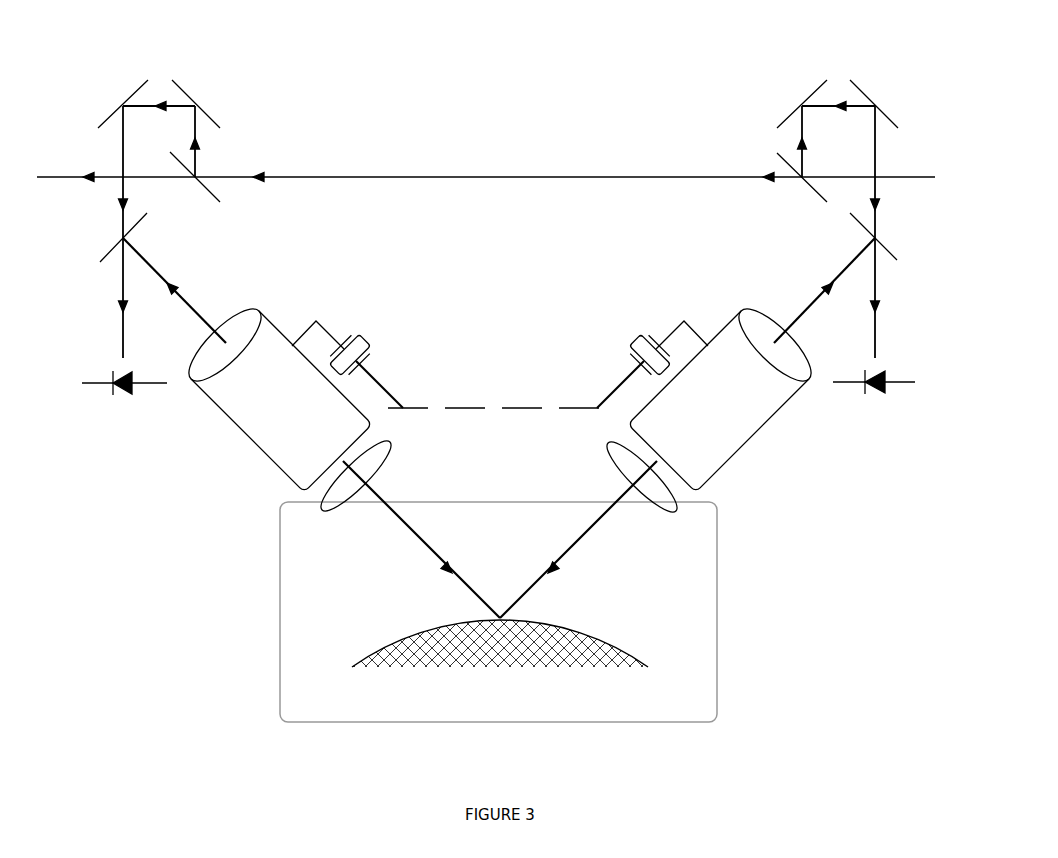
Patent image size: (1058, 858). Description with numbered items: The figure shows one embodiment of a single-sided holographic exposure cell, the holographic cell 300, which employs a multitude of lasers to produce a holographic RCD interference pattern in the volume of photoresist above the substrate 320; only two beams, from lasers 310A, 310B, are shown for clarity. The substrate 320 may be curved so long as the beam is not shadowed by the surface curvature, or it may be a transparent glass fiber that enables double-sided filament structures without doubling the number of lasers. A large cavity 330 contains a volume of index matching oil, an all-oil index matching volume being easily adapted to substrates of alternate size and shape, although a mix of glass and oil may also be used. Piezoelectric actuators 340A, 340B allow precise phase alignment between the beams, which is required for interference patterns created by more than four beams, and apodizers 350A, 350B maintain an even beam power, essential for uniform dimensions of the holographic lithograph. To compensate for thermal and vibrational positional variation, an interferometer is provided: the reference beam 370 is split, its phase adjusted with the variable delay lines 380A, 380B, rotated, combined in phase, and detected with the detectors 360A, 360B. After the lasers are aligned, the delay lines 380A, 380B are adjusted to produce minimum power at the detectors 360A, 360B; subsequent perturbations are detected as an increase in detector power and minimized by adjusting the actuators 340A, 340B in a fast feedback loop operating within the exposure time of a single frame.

The holographic cell 300 is at (683, 753).
The laser 310A is at (302, 414).
The laser 310B is at (732, 414).
The substrate 320 is at (642, 665).
The cavity 330 is at (497, 408).
The piezoelectric actuator 340A is at (362, 338).
The piezoelectric actuator 340B is at (635, 337).
The apodizer 350A is at (333, 505).
The apodizer 350B is at (667, 505).
The detector 360A is at (123, 397).
The detector 360B is at (873, 395).
The reference beam 370 is at (522, 177).
The variable delay line 380A is at (163, 88).
The variable delay line 380B is at (842, 88).